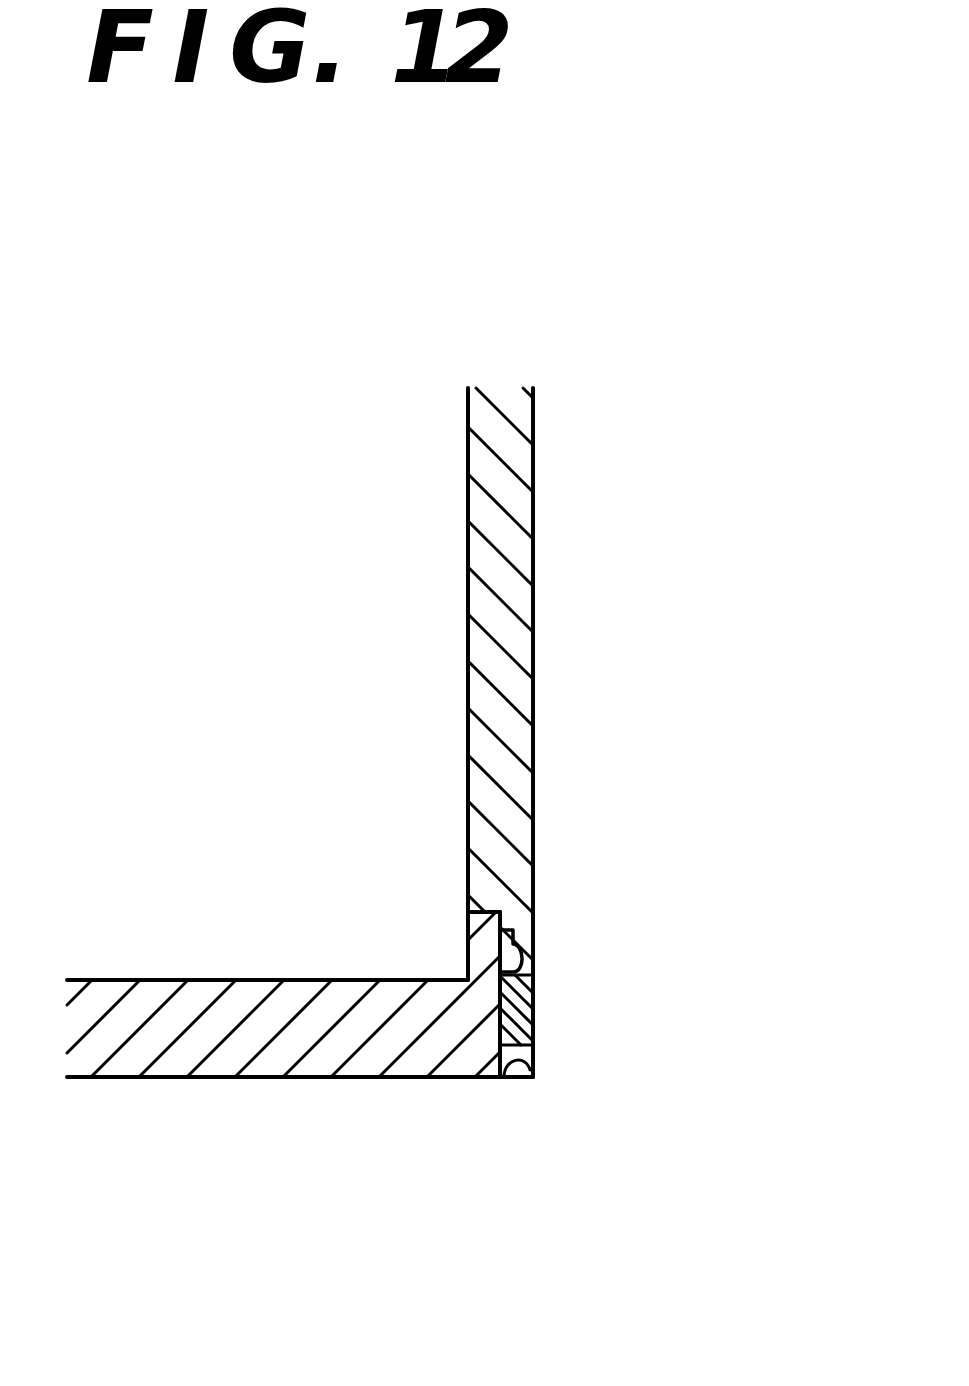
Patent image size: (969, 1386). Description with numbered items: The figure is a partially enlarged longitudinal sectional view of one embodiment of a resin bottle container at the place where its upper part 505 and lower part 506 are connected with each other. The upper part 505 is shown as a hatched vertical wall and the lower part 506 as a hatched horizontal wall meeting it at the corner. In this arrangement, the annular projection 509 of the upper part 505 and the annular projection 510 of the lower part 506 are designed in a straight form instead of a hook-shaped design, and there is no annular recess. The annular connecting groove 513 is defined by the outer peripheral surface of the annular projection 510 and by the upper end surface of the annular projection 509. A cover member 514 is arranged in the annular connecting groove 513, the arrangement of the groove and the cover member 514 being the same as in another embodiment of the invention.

The upper part 505 is at (535, 533).
The lower part 506 is at (207, 1078).
The annular projection 509 is at (525, 914).
The annular projection 510 is at (467, 928).
The annular connecting groove 513 is at (505, 1078).
The cover member 514 is at (530, 1006).